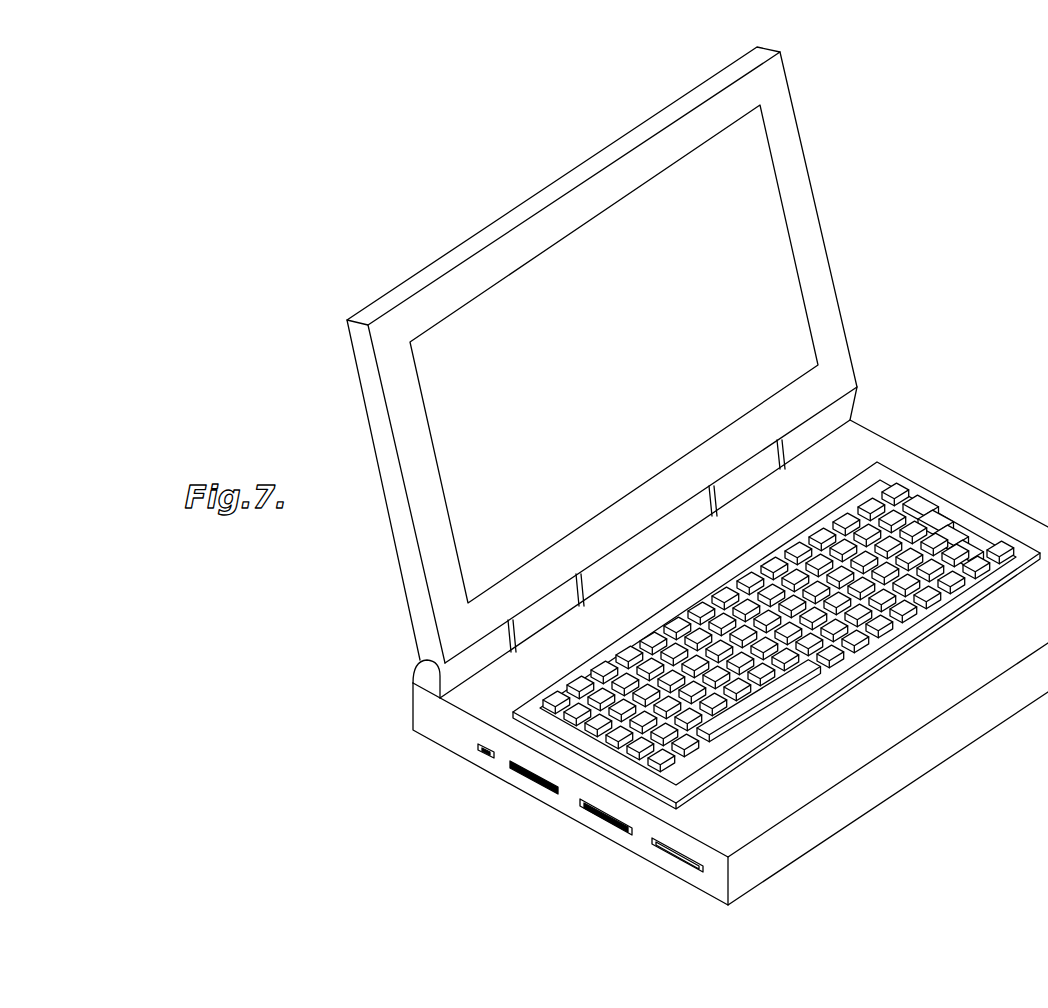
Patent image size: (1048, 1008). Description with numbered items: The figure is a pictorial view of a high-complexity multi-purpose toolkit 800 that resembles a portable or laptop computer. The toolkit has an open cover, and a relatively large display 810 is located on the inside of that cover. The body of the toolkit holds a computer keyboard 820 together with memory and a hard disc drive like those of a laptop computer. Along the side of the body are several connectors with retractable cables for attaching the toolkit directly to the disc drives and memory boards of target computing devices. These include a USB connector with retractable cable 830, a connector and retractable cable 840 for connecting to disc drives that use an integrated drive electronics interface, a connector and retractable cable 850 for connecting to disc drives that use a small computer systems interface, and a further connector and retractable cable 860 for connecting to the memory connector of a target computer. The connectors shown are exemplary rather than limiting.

The multi-purpose toolkit 800 is at (697, 476).
The display 810 is at (783, 240).
The computer keyboard 820 is at (925, 507).
The USB connector with retractable cable 830 is at (478, 753).
The connector and retractable cable 840 is at (540, 782).
The connector and retractable cable 850 is at (602, 815).
The connector and retractable cable 860 is at (673, 852).